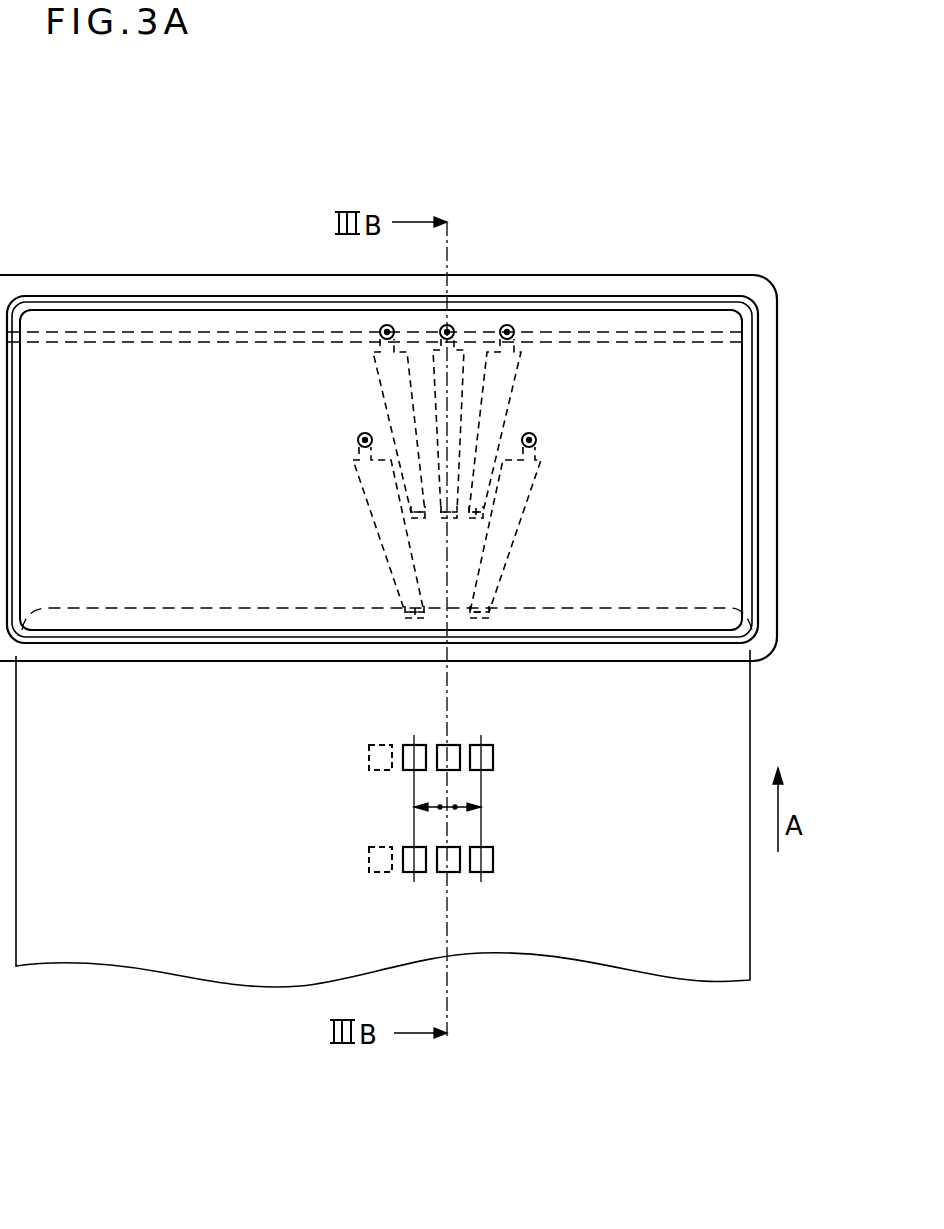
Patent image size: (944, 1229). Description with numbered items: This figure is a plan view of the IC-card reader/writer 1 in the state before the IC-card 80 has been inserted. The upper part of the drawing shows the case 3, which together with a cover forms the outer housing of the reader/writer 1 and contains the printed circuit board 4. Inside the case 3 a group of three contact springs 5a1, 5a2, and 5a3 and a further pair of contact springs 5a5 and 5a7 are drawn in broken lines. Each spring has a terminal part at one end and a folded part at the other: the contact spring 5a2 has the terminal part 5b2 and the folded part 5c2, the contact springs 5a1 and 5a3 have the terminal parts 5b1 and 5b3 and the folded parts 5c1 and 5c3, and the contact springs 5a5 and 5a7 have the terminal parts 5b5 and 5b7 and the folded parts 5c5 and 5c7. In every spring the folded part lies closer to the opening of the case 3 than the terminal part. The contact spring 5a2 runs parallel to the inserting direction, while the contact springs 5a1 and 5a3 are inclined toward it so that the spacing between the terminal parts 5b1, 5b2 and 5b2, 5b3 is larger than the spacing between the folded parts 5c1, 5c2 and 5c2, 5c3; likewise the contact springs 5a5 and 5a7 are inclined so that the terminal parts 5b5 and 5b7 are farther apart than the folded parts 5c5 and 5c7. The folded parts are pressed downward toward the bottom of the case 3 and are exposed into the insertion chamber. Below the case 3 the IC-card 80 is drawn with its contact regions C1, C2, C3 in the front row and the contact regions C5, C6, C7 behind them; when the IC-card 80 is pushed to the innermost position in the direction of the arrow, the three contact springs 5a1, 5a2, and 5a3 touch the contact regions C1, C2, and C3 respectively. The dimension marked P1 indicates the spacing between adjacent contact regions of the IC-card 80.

The IC-card reader/writer 1 is at (790, 516).
The case 3 is at (768, 300).
The printed circuit board 4 is at (720, 432).
The IC-card 80 is at (732, 942).
The contact spring 5a1 is at (504, 422).
The contact spring 5a2 is at (500, 368).
The contact spring 5a3 is at (384, 380).
The contact spring 5a5 is at (500, 570).
The contact spring 5a7 is at (394, 554).
The terminal part 5b1 is at (509, 330).
The terminal part 5b2 is at (449, 332).
The terminal part 5b3 is at (386, 330).
The terminal part 5b5 is at (531, 438).
The terminal part 5b7 is at (363, 438).
The folded part 5c1 is at (528, 504).
The folded part 5c2 is at (500, 518).
The folded part 5c3 is at (398, 510).
The folded part 5c5 is at (498, 612).
The folded part 5c7 is at (405, 612).
The contact region C1 is at (486, 746).
The contact region C2 is at (447, 746).
The contact region C3 is at (406, 746).
The contact region C5 is at (490, 862).
The contact region C6 is at (452, 872).
The contact region C7 is at (410, 872).
The pad pitch P1 is at (447, 796).